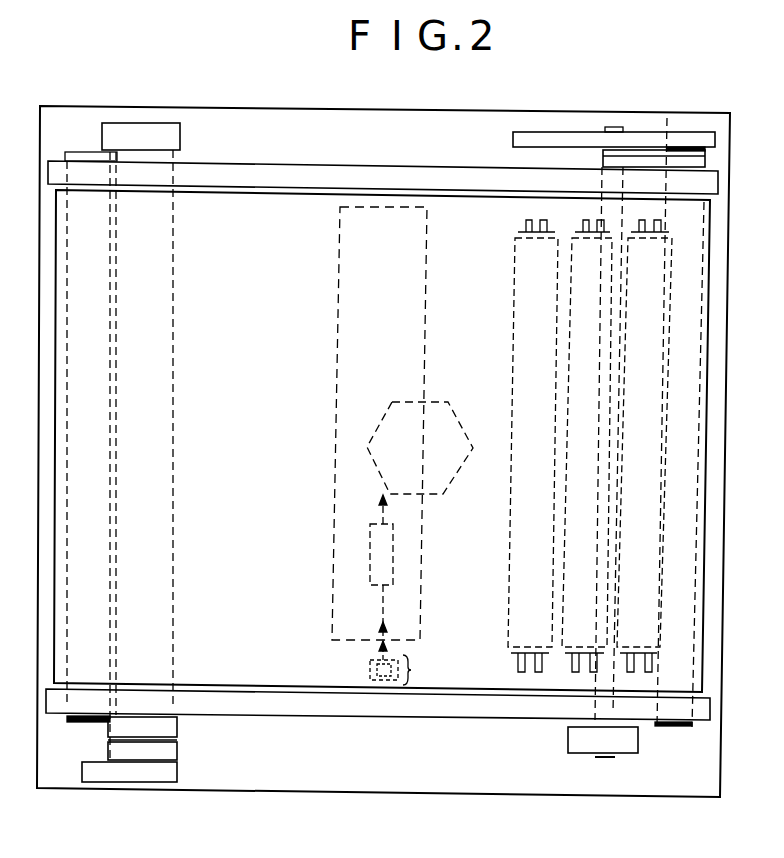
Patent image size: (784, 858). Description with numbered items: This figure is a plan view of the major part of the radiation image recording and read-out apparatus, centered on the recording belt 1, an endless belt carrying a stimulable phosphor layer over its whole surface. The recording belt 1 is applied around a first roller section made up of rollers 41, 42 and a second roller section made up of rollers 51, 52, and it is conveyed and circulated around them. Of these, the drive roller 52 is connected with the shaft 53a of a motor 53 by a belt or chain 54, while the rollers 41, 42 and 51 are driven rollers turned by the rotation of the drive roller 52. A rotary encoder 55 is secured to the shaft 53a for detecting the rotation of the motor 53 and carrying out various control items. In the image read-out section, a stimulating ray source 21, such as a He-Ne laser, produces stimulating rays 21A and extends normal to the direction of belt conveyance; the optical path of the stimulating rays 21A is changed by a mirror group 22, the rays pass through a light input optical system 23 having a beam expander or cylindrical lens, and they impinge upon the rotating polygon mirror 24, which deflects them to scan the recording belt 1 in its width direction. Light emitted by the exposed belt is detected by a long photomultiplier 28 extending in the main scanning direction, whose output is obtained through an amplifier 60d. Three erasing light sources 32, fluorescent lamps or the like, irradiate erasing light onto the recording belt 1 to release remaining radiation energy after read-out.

The recording belt 1 is at (425, 697).
The stimulating ray source 21 is at (423, 562).
The stimulating rays 21A is at (385, 608).
The mirror group 22 is at (406, 663).
The light input optical system 23 is at (396, 548).
The rotating polygon mirror 24 is at (441, 412).
The photomultiplier 28 is at (160, 405).
The erasing light sources 32 is at (510, 626).
The roller 41 is at (79, 453).
The roller 42 is at (75, 727).
The roller 51 is at (676, 441).
The drive roller 52 is at (665, 728).
The motor 53 is at (550, 137).
The shaft 53a is at (615, 125).
The belt or chain 54 is at (652, 158).
The rotary encoder 55 is at (573, 742).
The amplifier 60d is at (147, 793).